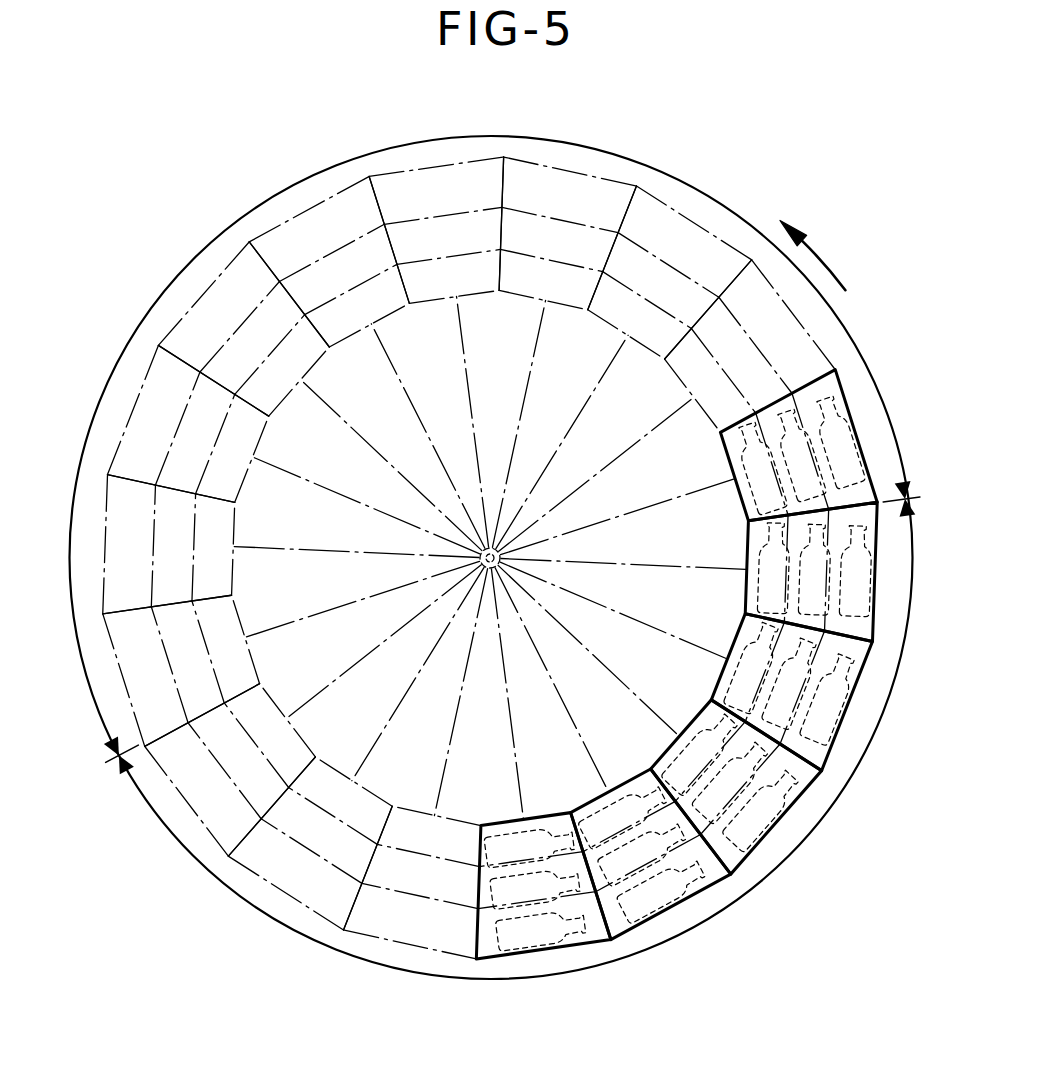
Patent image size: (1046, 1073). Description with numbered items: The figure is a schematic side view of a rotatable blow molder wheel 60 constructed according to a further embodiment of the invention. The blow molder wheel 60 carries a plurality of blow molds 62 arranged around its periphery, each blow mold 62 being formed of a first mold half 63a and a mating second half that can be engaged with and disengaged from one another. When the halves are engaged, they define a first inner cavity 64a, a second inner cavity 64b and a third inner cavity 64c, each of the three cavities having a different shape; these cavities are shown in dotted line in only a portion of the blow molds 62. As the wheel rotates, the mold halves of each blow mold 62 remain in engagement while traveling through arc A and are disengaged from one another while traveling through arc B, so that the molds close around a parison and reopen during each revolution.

The rotatable blow molder wheel 60 is at (762, 168).
The arc A is at (652, 166).
The arc B is at (853, 775).
The blow mold 62 is at (838, 373).
The first mold half 63a is at (393, 930).
The first inner cavity 64a is at (603, 818).
The second inner cavity 64b is at (503, 882).
The third inner cavity 64c is at (762, 822).